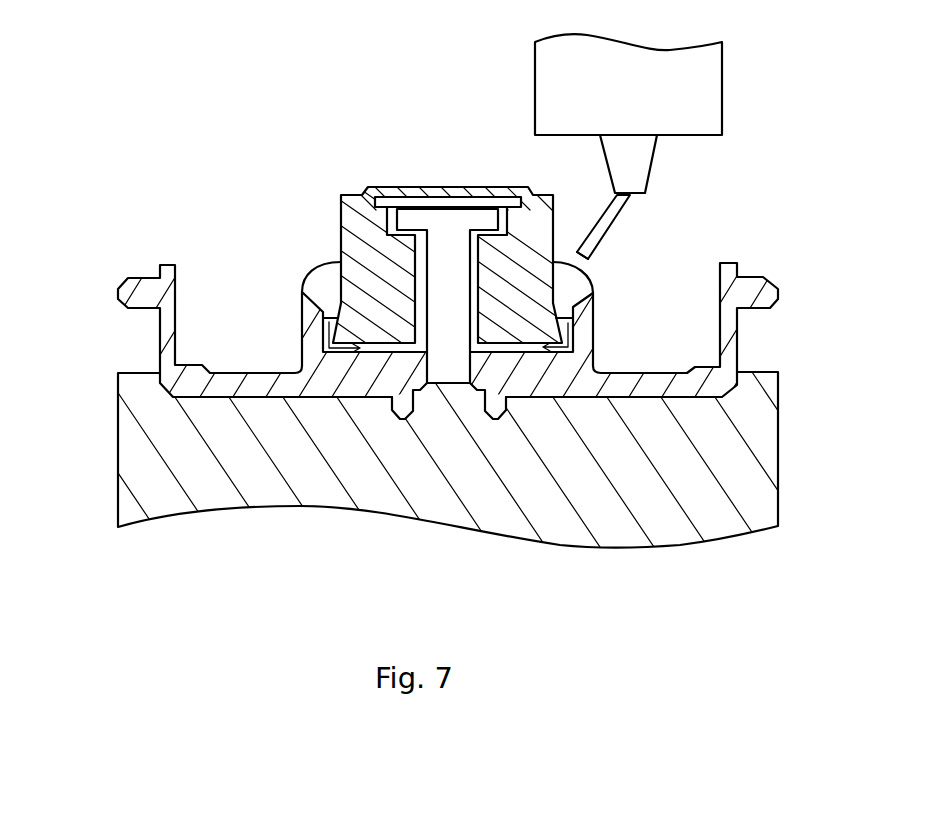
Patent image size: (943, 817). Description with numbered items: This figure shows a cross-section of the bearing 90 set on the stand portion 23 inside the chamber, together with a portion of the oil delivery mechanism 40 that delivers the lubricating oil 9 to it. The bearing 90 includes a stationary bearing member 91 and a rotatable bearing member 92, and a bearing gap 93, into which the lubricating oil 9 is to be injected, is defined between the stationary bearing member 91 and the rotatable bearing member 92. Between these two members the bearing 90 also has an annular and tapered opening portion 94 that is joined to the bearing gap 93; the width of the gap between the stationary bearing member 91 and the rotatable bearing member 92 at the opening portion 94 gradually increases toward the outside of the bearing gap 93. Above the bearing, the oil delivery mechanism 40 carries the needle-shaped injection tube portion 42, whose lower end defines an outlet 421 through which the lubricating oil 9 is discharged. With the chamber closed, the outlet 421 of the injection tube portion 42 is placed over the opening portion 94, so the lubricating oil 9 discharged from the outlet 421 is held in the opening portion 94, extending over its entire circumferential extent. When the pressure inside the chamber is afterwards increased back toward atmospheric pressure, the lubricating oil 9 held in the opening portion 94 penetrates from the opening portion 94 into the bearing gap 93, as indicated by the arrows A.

The lubricating oil 9 is at (455, 305).
The stand portion 23 is at (135, 442).
The oil delivery mechanism 40 is at (731, 89).
The injection tube portion 42 is at (620, 209).
The outlet 421 is at (572, 252).
The bearing 90 is at (448, 212).
The stationary bearing member 91 is at (357, 220).
The rotatable bearing member 92 is at (565, 377).
The bearing gap 93 is at (422, 230).
The opening portion 94 is at (570, 290).
The arrows A is at (552, 347).